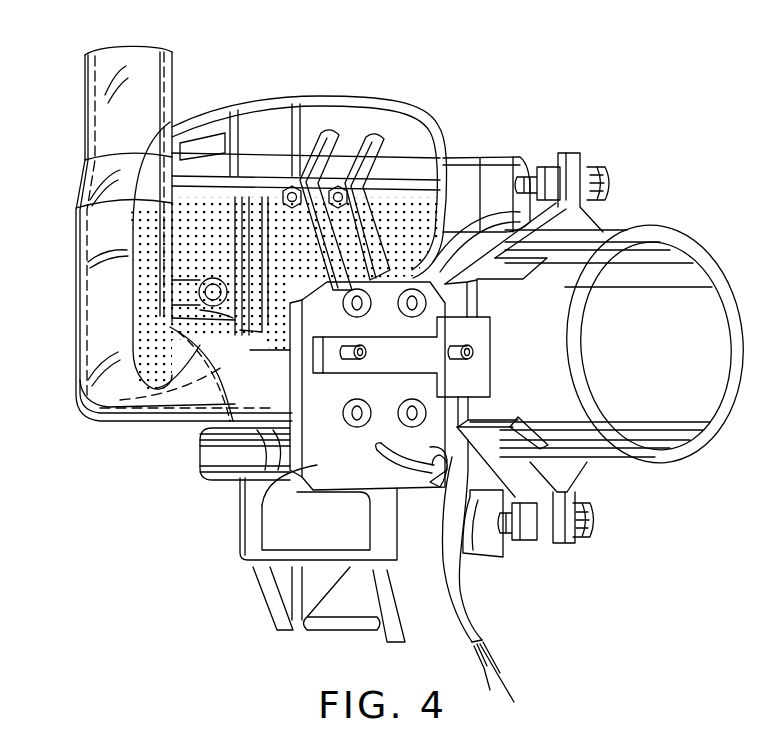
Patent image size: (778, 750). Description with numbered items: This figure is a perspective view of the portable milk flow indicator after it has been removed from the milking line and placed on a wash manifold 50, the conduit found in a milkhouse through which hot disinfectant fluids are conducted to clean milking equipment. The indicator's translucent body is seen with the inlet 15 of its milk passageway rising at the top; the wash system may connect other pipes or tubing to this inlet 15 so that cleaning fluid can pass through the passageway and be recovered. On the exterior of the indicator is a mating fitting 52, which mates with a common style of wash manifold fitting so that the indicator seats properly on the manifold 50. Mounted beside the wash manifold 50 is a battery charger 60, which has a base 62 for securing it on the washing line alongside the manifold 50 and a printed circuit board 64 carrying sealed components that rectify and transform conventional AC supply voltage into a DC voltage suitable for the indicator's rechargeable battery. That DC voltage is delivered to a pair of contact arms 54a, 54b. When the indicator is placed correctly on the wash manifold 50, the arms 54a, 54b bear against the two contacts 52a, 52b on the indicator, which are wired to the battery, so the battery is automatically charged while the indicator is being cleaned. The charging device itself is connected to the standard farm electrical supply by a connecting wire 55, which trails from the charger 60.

The inlet 15 is at (122, 46).
The wash manifold 50 is at (680, 238).
The mating fitting 52 is at (203, 455).
The contact 52a is at (292, 187).
The contact 52b is at (340, 187).
The contact arm 54a is at (325, 148).
The contact arm 54b is at (378, 148).
The connecting wire 55 is at (467, 602).
The battery charger 60 is at (327, 490).
The base 62 is at (477, 332).
The printed circuit board 64 is at (320, 463).